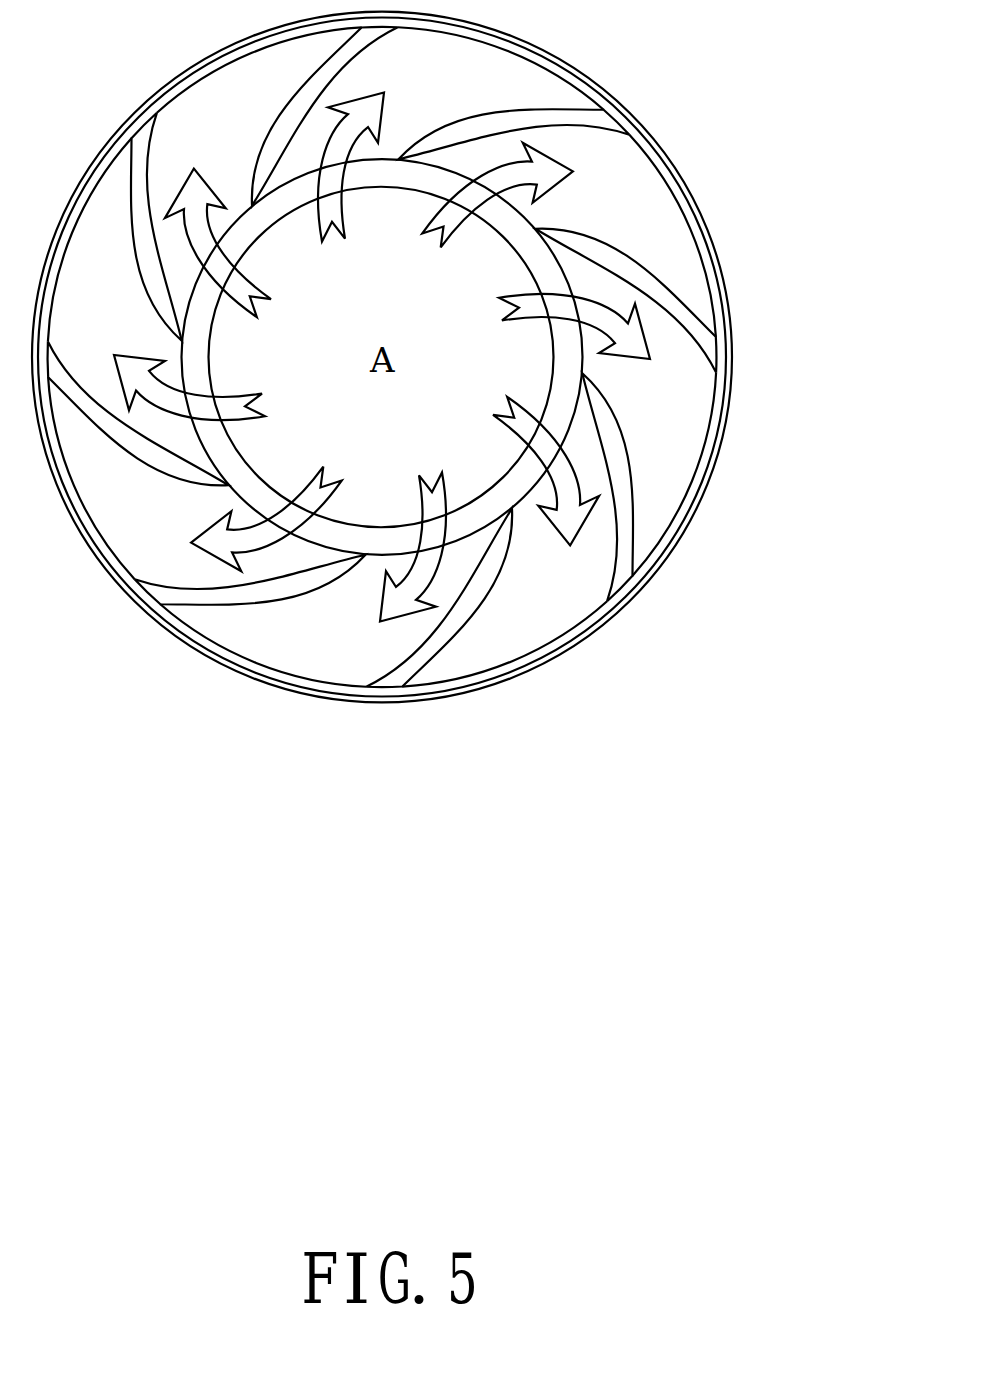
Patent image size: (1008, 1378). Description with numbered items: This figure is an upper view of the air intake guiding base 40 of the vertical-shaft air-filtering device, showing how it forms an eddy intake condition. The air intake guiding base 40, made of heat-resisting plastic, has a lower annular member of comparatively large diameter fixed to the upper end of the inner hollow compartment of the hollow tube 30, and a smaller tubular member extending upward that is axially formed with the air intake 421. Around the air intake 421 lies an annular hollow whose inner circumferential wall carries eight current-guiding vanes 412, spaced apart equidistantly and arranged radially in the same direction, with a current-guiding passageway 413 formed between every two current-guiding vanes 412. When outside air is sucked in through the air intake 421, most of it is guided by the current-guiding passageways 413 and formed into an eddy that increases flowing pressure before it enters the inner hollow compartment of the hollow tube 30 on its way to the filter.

The hollow tube 30 is at (590, 641).
The air intake guiding base 40 is at (630, 600).
The current-guiding vane 412 is at (540, 112).
The current-guiding passageway 413 is at (645, 200).
The air intake 421 is at (374, 487).